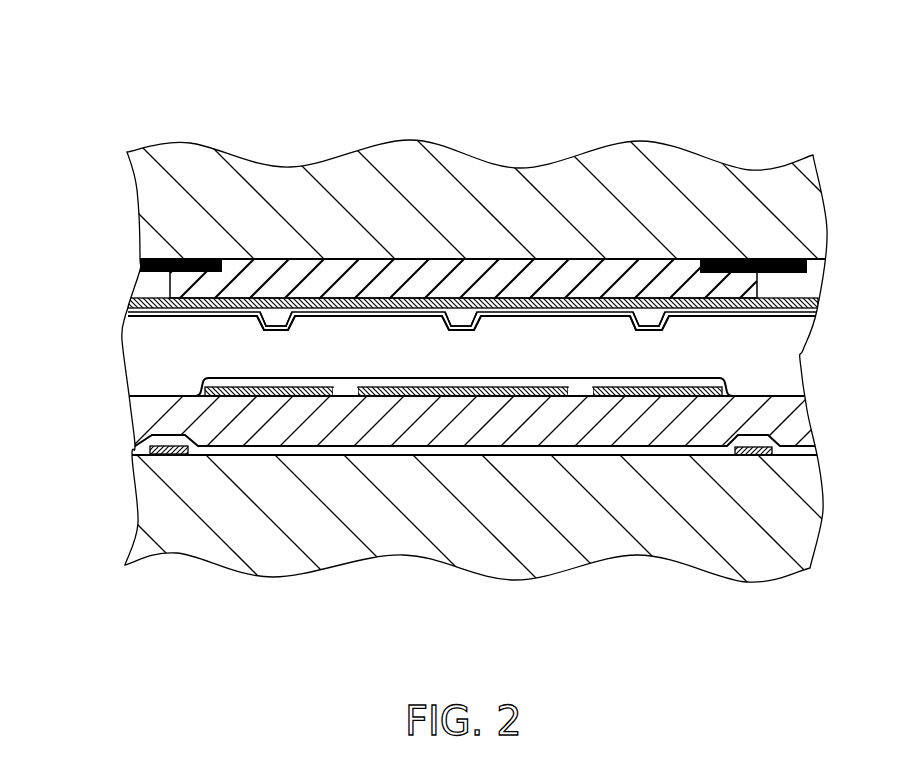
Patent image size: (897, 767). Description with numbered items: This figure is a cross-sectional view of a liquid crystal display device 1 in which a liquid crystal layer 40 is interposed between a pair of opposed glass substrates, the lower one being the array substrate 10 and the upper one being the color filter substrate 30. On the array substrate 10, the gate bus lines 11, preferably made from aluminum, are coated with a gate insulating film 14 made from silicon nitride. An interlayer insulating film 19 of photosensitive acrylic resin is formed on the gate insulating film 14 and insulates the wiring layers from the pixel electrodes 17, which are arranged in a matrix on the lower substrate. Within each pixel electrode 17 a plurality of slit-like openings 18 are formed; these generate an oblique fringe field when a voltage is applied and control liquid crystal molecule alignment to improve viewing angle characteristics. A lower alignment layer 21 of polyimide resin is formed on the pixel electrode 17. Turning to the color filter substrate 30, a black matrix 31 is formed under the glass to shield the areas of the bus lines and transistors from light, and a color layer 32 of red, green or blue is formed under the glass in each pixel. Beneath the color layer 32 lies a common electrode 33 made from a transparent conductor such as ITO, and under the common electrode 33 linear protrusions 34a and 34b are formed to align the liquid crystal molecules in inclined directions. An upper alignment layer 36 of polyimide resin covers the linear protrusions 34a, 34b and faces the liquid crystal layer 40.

The liquid crystal display device 1 is at (738, 112).
The glass substrate (array substrate) 10 is at (205, 540).
The gate bus line 11 is at (135, 448).
The gate insulating film 14 is at (800, 462).
The pixel electrode 17 is at (245, 387).
The opening 18 is at (352, 387).
The interlayer insulating film 19 is at (143, 415).
The lower alignment layer 21 is at (200, 382).
The glass substrate (color filter substrate) 30 is at (200, 165).
The black matrix 31 is at (160, 257).
The color layer 32 is at (507, 277).
The common electrode 33 is at (742, 318).
The linear protrusion 34a is at (477, 320).
The linear protrusion 34b is at (290, 318).
The upper alignment layer 36 is at (128, 308).
The liquid crystal layer 40 is at (793, 340).